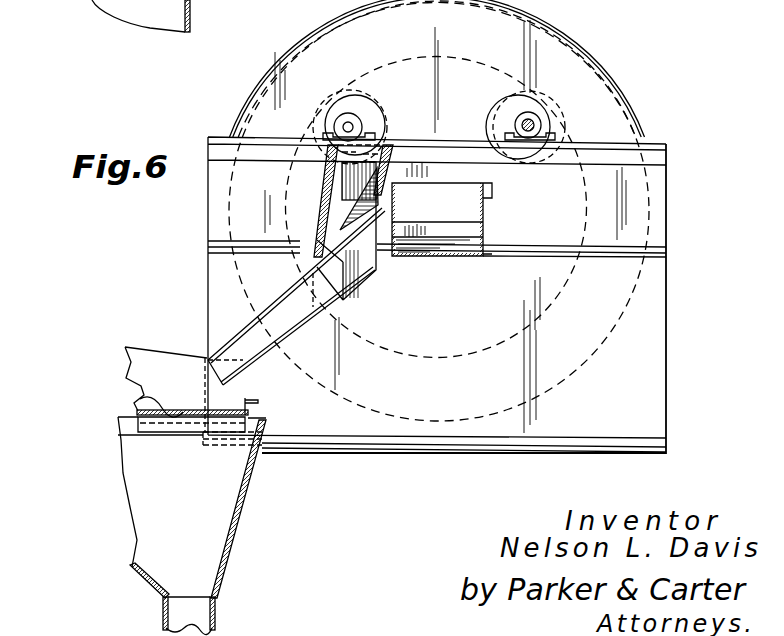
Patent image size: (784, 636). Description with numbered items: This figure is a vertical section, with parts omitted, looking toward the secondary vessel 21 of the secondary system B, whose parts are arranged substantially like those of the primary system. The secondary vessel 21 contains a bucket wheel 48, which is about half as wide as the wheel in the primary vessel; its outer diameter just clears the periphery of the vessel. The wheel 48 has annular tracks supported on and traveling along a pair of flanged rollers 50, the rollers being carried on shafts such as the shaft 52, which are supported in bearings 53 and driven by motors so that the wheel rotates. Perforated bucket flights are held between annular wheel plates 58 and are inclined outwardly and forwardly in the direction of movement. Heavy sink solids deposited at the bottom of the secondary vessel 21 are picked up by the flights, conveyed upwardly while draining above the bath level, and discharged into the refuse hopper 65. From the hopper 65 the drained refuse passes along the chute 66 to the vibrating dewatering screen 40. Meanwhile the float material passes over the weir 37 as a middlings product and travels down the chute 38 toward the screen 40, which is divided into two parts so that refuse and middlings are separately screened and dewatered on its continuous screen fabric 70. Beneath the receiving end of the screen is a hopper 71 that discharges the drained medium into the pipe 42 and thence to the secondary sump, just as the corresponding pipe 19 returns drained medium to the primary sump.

The pipe 19 is at (192, 25).
The secondary vessel 21 is at (252, 90).
The secondary system B is at (621, 74).
The wheel 48 is at (690, 208).
The annular wheel plates 58 is at (634, 291).
The bearings 53 is at (514, 120).
The flanged rollers 50 is at (512, 128).
The shaft 52 is at (531, 122).
The refuse hopper 65 is at (390, 148).
The chute 66 is at (285, 297).
The weir 37 is at (447, 224).
The chute 38 is at (448, 258).
The mechanical dewatering vibrating screen 40 is at (155, 356).
The continuous screen fabric 70 is at (135, 396).
The hopper 71 is at (140, 504).
The pipe 42 is at (165, 607).